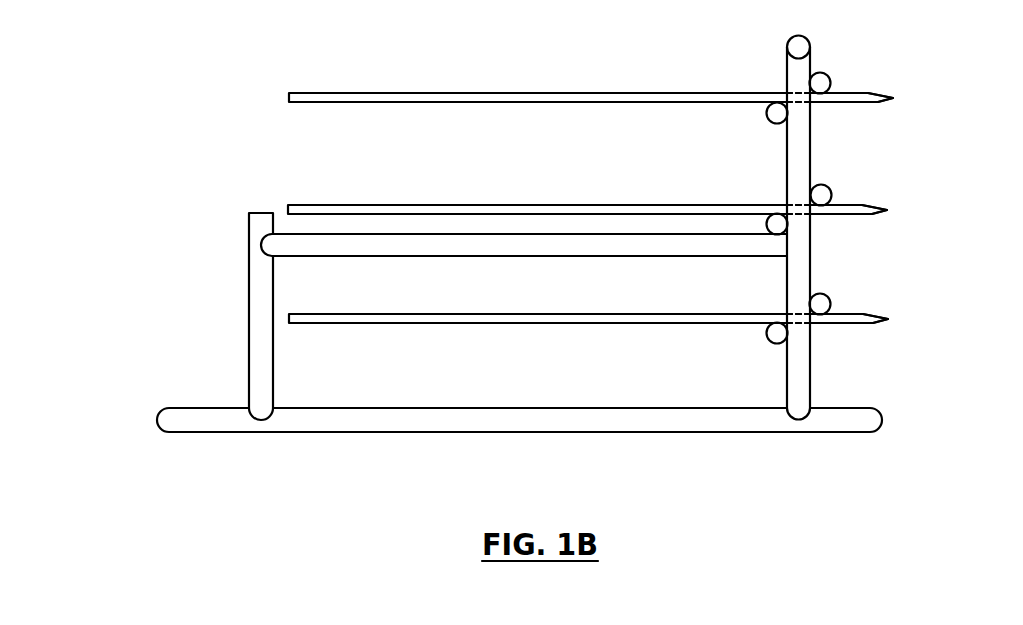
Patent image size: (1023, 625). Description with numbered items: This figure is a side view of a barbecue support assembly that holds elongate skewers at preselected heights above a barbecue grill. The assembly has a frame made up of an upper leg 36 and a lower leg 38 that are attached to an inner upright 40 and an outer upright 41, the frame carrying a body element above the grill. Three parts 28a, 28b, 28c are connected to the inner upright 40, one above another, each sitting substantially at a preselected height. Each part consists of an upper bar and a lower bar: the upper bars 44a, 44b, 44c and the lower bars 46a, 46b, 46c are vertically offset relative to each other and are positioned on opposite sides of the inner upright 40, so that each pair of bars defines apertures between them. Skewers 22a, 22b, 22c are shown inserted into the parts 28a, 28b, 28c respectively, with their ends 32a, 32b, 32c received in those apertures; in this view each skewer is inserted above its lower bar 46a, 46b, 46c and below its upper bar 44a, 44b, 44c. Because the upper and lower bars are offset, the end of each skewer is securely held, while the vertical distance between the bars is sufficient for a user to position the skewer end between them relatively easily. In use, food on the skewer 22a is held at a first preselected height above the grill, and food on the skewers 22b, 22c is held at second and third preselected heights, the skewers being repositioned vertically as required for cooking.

The skewer 22a is at (313, 93).
The skewer 22b is at (323, 203).
The skewer 22c is at (355, 322).
The part 28a is at (829, 117).
The part 28b is at (767, 195).
The part 28c is at (825, 343).
The end of the skewer 32a is at (870, 95).
The end of the skewer 32b is at (877, 208).
The end of the skewer 32c is at (883, 320).
The upper leg 36 is at (475, 245).
The lower leg 38 is at (437, 422).
The inner upright 40 is at (803, 385).
The outer upright 41 is at (267, 332).
The upper bar 44a is at (826, 74).
The upper bar 44b is at (827, 187).
The upper bar 44c is at (830, 299).
The lower bar 46a is at (769, 122).
The lower bar 46b is at (786, 227).
The lower bar 46c is at (772, 343).